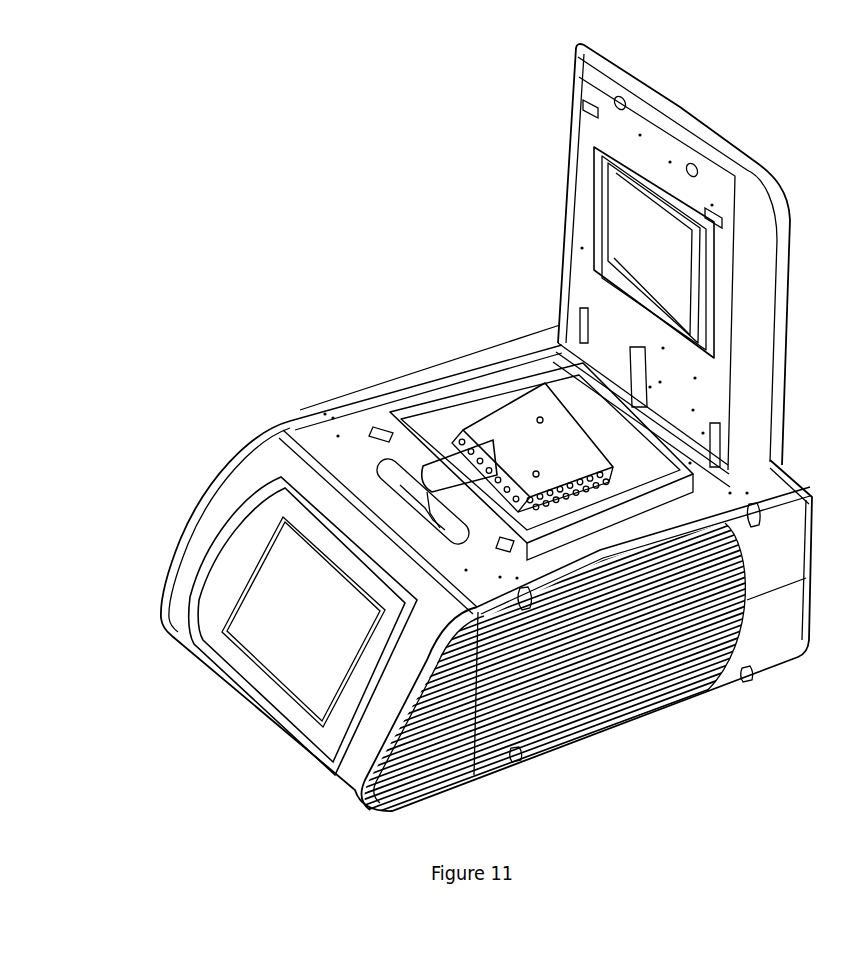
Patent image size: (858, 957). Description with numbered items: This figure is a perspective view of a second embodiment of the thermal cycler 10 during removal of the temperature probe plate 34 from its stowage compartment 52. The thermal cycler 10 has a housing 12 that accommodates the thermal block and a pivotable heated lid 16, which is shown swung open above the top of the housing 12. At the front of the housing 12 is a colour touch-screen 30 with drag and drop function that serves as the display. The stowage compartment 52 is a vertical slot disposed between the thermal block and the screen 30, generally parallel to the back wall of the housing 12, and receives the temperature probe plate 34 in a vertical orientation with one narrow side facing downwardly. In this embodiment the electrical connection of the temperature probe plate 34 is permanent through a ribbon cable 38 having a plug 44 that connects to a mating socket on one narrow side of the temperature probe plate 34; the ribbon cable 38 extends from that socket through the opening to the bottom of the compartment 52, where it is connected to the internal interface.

The thermal cycler 10 is at (277, 307).
The housing 12 is at (268, 455).
The heated lid 16 is at (717, 117).
The touch-screen 30 is at (283, 647).
The temperature probe plate 34 is at (520, 433).
The ribbon cable 38 is at (453, 470).
The plug 44 is at (493, 467).
The stowage compartment 52 is at (386, 466).